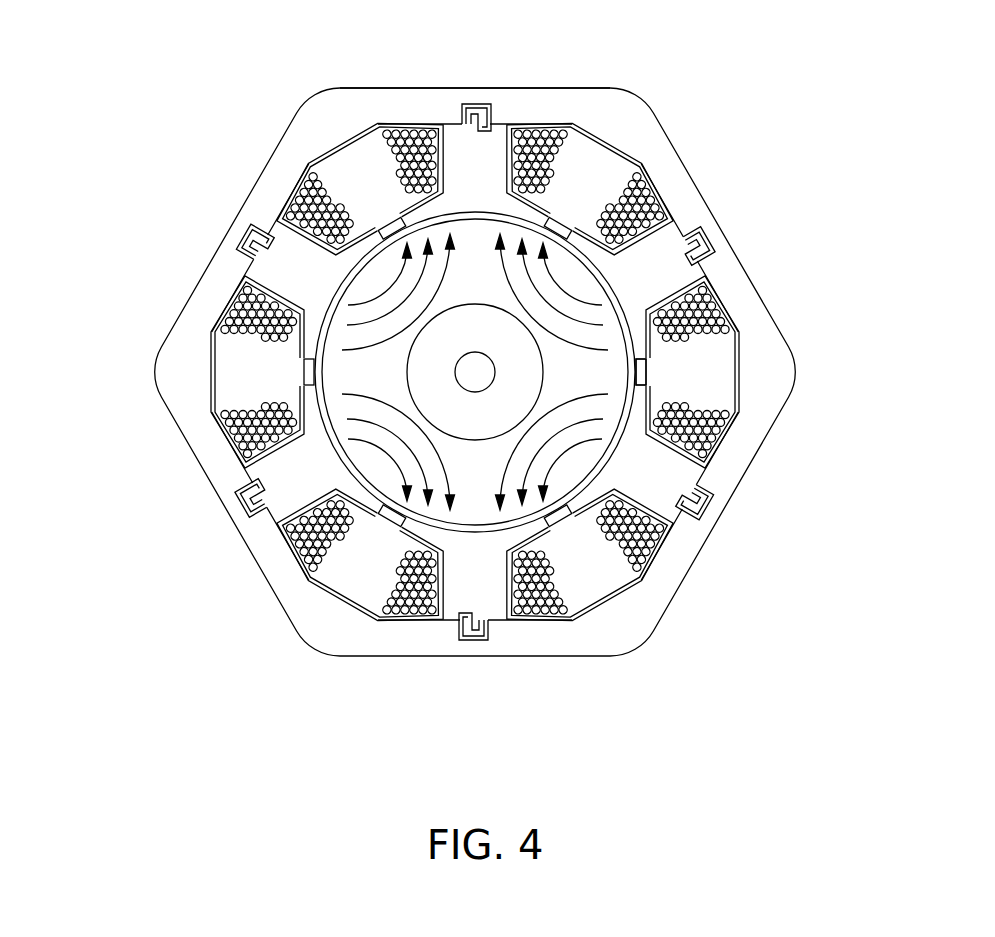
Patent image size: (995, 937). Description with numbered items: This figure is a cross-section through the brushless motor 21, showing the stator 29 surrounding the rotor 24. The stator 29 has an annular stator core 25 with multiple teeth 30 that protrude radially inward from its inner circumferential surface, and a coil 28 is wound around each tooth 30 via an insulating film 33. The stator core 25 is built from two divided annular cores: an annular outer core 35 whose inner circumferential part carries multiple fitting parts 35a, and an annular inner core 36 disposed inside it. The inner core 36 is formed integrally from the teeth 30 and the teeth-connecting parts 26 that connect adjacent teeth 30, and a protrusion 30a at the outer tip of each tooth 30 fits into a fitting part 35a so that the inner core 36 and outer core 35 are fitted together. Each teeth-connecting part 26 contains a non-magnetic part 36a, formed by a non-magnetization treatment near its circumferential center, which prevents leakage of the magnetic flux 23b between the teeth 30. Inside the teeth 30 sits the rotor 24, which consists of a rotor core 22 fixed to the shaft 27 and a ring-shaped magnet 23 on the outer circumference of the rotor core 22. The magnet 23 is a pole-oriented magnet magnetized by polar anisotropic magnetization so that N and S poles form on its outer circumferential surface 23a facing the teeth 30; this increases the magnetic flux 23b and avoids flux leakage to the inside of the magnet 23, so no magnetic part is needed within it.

The brushless motor 21 is at (497, 331).
The rotor core 22 is at (462, 410).
The ring-shaped magnet 23 is at (655, 287).
The outer circumferential surface 23a is at (468, 602).
The magnetic flux 23b is at (325, 336).
The rotor 24 is at (603, 457).
The stator core 25 is at (378, 106).
The teeth-connecting part 26 is at (363, 250).
The shaft 27 is at (590, 384).
The coil 28 is at (705, 410).
The stator 29 is at (540, 87).
The tooth 30 is at (465, 160).
The protrusion 30a is at (463, 102).
The insulating film 33 is at (207, 368).
The outer core 35 is at (268, 190).
The fitting part 35a is at (498, 102).
The inner core 36 is at (556, 160).
The non-magnetic part 36a is at (383, 217).